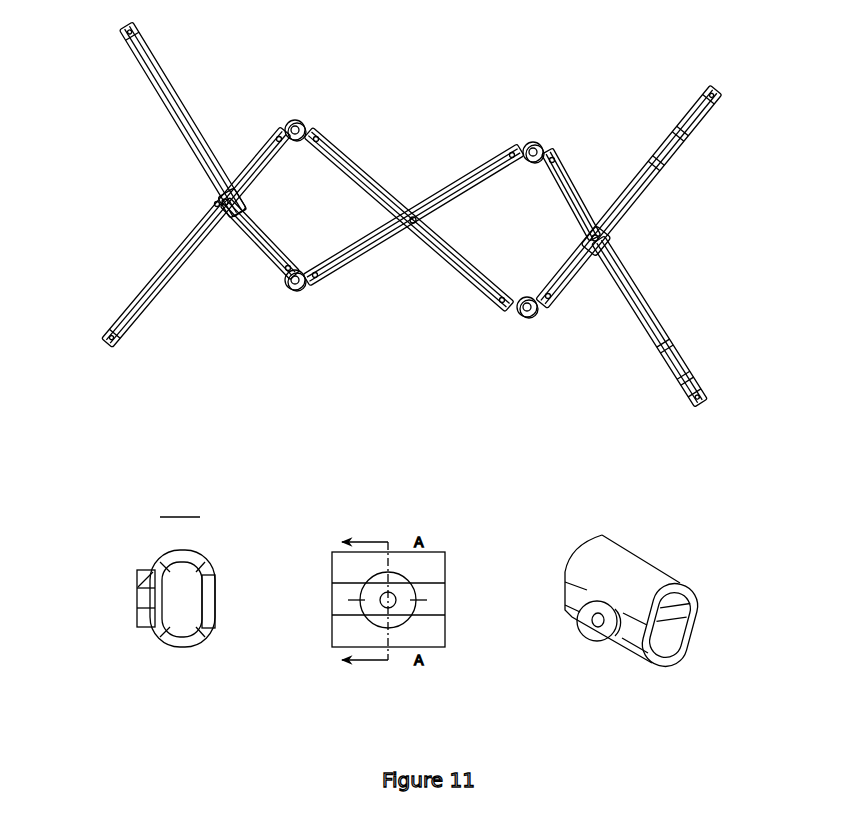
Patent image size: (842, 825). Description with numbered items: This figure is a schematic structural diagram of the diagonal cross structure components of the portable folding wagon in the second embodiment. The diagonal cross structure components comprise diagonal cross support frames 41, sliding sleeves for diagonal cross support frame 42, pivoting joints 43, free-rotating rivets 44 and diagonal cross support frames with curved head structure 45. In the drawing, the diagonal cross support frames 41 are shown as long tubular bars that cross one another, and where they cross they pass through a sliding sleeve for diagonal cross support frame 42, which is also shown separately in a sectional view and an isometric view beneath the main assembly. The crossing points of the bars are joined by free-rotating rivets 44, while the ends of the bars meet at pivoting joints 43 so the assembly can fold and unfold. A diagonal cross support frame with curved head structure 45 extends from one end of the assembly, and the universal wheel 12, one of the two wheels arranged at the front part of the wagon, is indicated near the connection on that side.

The diagonal cross support frame 41 is at (165, 96).
The sliding sleeve for diagonal cross support frame 42 is at (222, 193).
The pivoting joint 43 is at (291, 288).
The free-rotating rivet 44 is at (215, 205).
The universal wheel 12 is at (606, 241).
The diagonal cross support frame with curved head structure 45 is at (669, 340).